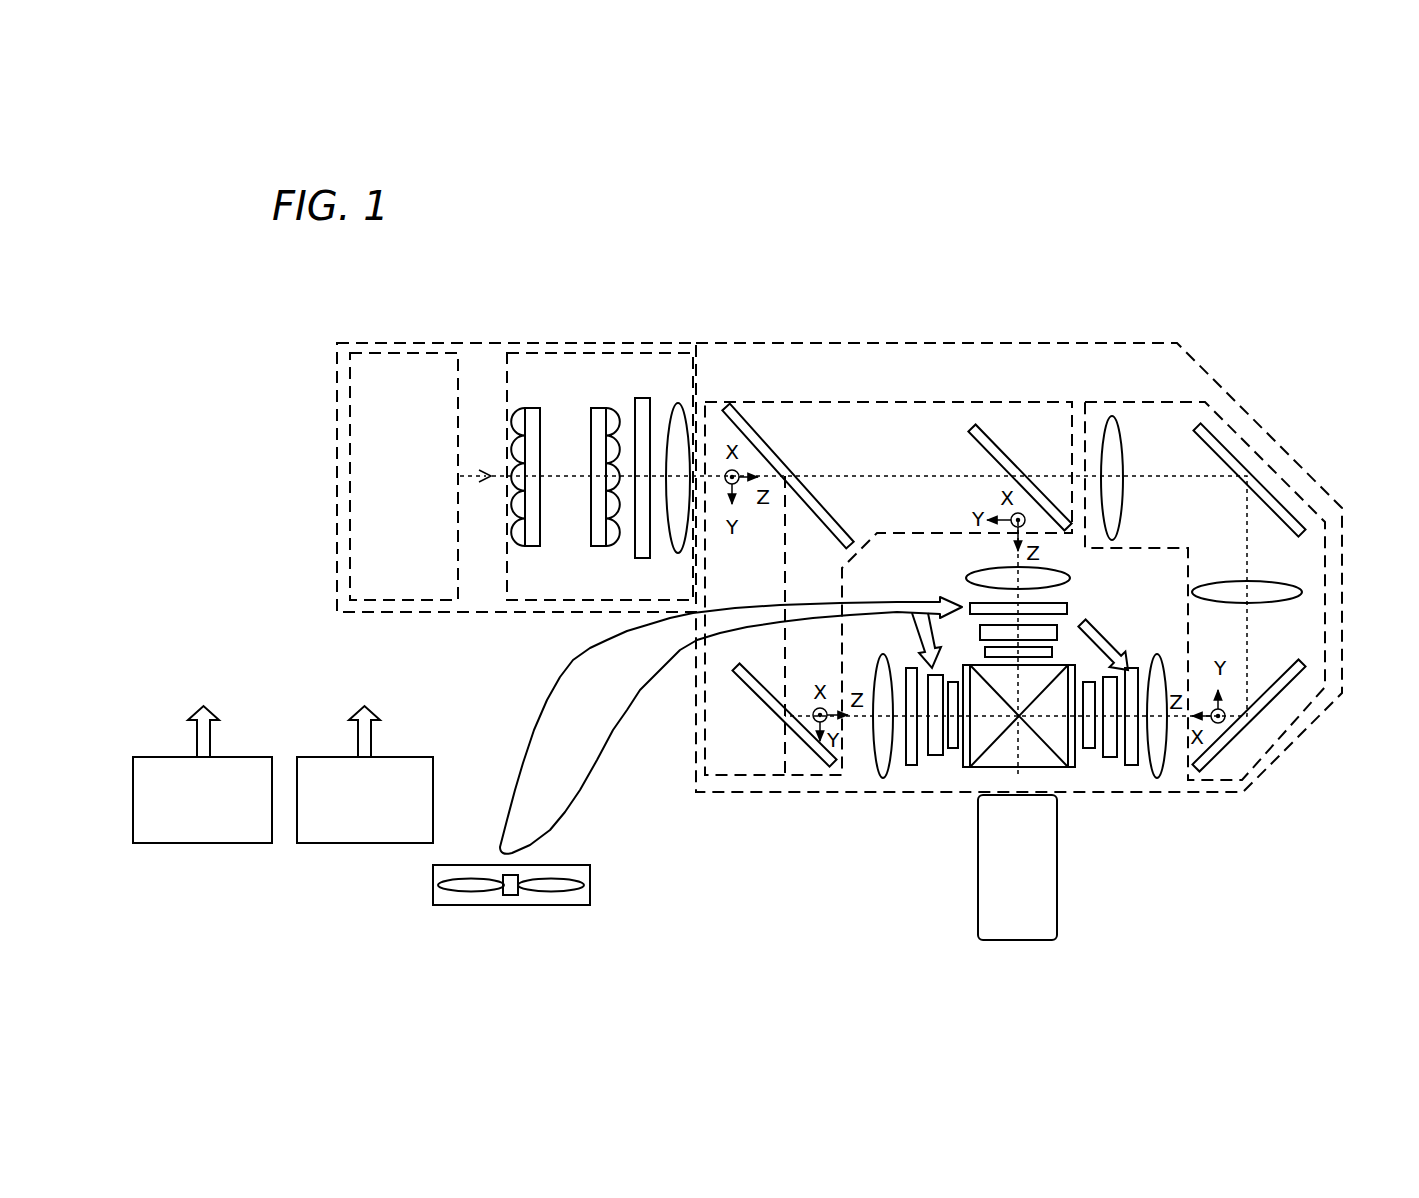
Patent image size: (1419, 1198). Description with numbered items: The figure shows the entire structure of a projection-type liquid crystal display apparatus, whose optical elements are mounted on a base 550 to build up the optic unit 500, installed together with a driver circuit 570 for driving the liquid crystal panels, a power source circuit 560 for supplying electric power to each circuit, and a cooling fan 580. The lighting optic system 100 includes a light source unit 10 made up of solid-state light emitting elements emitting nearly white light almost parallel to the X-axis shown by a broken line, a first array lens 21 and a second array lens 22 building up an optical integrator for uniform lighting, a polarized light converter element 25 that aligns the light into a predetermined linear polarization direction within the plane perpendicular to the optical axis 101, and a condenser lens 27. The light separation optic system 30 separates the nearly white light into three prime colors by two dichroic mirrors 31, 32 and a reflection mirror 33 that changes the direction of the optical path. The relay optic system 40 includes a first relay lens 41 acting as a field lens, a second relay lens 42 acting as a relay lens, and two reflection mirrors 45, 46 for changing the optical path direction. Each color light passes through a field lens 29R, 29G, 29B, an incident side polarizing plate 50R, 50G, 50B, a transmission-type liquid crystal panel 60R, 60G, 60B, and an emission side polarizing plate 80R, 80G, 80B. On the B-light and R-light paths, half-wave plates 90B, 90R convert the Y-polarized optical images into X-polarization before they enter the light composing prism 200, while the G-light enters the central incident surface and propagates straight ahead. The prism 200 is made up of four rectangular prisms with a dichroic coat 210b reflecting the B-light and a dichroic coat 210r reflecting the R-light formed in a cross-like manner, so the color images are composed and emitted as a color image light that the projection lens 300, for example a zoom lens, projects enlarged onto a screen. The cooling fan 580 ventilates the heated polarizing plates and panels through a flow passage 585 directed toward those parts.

The light source unit 10 is at (406, 390).
The first array lens 21 is at (535, 405).
The second array lens 22 is at (598, 405).
The polarized light converter element 25 is at (643, 396).
The condenser lens 27 is at (681, 402).
The field lens 29B is at (880, 775).
The field lens 29G is at (972, 578).
The field lens 29R is at (1158, 777).
The light separation optic system 30 is at (896, 390).
The dichroic mirror 31 is at (752, 420).
The dichroic mirror 32 is at (1002, 428).
The reflection mirror 33 is at (792, 733).
The relay optic system 40 is at (1165, 390).
The first relay lens 41 is at (1118, 416).
The second relay lens 42 is at (1303, 592).
The reflection mirror 45 is at (1232, 440).
The reflection mirror 46 is at (1290, 695).
The incident side polarizing plate 50B is at (911, 766).
The incident side polarizing plate 50G is at (972, 606).
The incident side polarizing plate 50R is at (1130, 768).
The transmission-type liquid crystal panel 60B is at (935, 758).
The transmission-type liquid crystal panel 60G is at (1060, 630).
The transmission-type liquid crystal panel 60R is at (1108, 760).
The emission side polarizing plate 80B is at (953, 750).
The emission side polarizing plate 80G is at (1052, 652).
The emission side polarizing plate 80R is at (1088, 750).
The ½λ wavelength plate 90B is at (966, 770).
The ½λ wavelength plate 90R is at (1072, 770).
The lighting optic system 100 is at (493, 338).
The optical axis 101 is at (568, 480).
The light composing prism 200 is at (985, 770).
The dichroic coat 210r is at (1000, 770).
The dichroic coat 210b is at (1040, 770).
The projection lens 300 is at (1018, 940).
The optic unit 500 is at (827, 336).
The base 550 is at (1343, 620).
The power source circuit 560 is at (202, 843).
The driver circuit 570 is at (365, 843).
The cooling fan 580 is at (510, 905).
The flow passage 585 is at (602, 760).